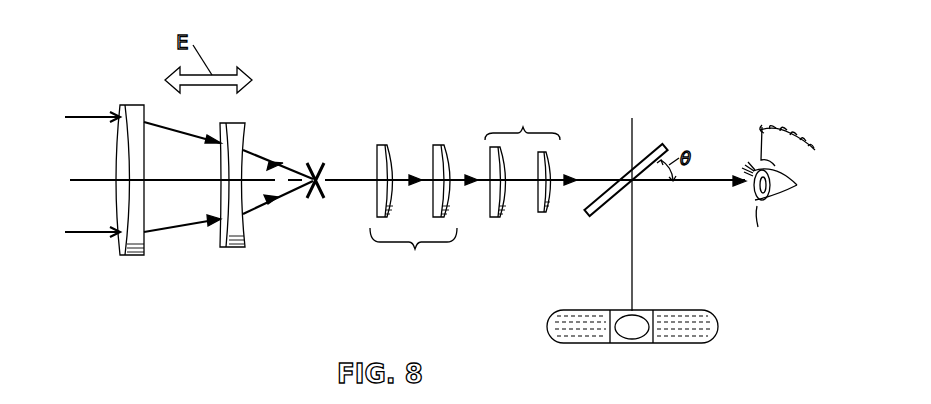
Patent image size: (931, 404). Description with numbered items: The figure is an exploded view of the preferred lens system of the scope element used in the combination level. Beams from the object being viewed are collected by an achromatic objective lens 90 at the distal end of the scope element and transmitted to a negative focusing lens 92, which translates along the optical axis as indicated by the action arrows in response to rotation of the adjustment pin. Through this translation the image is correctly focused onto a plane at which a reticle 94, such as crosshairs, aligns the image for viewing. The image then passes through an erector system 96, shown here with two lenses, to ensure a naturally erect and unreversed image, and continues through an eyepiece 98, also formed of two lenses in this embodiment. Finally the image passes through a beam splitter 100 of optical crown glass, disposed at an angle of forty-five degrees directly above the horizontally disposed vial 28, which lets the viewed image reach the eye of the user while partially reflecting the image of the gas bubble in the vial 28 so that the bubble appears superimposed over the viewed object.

The achromatic objective lens 90 is at (123, 238).
The negative focusing lens 92 is at (243, 228).
The reticle 94 is at (320, 162).
The erector system 96 is at (413, 211).
The eyepiece 98 is at (522, 160).
The beam splitter 100 is at (625, 201).
The vial 28 is at (583, 311).